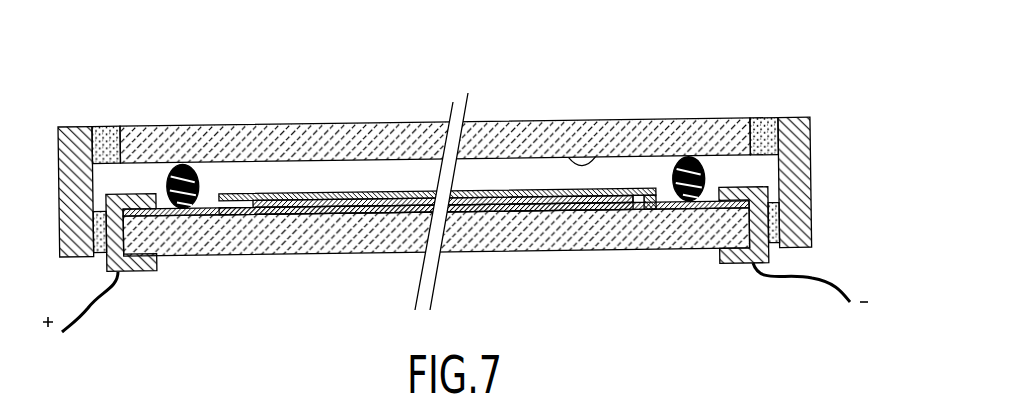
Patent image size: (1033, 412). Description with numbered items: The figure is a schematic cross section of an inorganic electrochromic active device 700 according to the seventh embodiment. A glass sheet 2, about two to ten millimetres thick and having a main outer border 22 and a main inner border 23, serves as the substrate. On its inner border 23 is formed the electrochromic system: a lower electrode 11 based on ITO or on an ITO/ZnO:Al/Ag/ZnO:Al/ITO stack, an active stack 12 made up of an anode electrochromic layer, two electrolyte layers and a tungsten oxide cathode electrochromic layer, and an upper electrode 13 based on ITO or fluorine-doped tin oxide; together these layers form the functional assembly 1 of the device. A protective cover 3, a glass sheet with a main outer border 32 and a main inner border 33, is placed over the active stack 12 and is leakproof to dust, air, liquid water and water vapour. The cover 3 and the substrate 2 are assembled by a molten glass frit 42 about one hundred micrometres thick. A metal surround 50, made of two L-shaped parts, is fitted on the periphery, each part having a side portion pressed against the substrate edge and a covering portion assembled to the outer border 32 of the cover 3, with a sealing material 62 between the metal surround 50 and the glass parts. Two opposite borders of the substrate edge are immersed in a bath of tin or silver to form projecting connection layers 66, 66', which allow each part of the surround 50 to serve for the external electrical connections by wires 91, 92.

The active device 700 is at (287, 102).
The metal surround 50 is at (67, 118).
The sealing material 62 is at (108, 125).
The protective cover 3 is at (435, 111).
The main outer border 32 is at (532, 120).
The main inner border 33 is at (596, 160).
The molten glass frit 42 is at (680, 162).
The glass sheet 2 is at (436, 262).
The main outer border 22 is at (535, 252).
The main inner border 23 is at (605, 213).
The electrochromic layer stack 1 is at (437, 277).
The lower electrode 11 is at (271, 202).
The active stack 12 is at (311, 206).
The upper electrode 13 is at (354, 212).
The projecting layer for the connections 66 is at (134, 261).
The projecting layer for the connections 66' is at (755, 253).
The wire 91 is at (88, 308).
The wire 92 is at (848, 300).